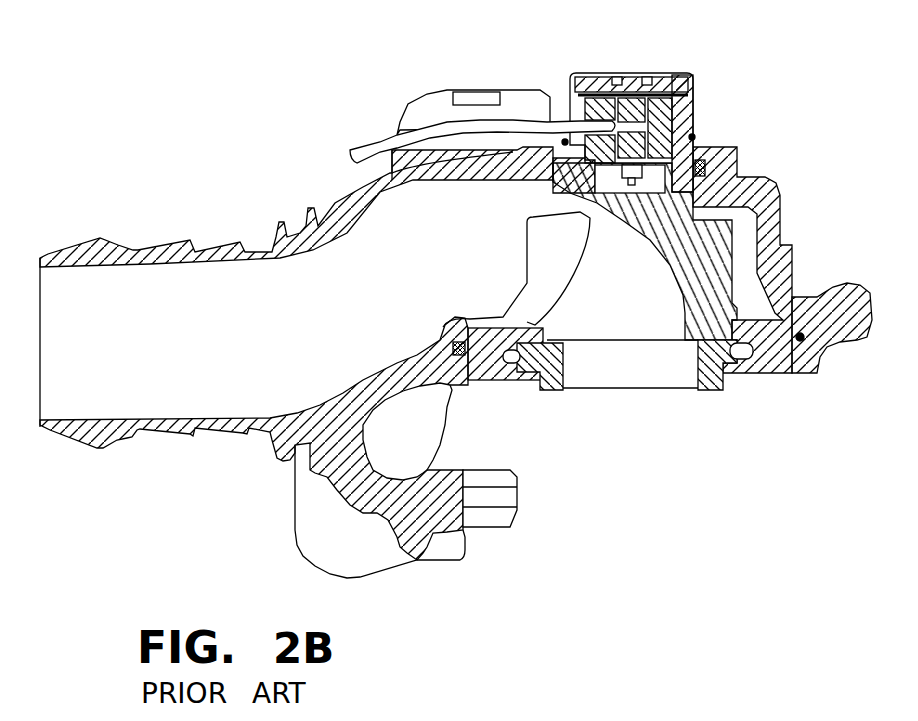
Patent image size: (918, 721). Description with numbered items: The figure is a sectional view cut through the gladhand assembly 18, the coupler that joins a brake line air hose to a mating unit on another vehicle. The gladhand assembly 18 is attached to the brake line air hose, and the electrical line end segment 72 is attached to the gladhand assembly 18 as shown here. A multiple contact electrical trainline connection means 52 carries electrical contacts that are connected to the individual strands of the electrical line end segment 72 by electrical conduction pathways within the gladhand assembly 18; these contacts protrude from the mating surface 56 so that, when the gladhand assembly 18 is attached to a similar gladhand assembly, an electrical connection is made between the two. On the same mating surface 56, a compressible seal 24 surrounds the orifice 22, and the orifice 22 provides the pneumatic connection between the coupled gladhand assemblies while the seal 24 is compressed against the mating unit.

The gladhand assembly 18 is at (157, 216).
The orifice 22 is at (632, 363).
The compressible seal 24 is at (710, 390).
The multiple contact electrical trainline connection means 52 is at (708, 97).
The mating surface 56 is at (497, 383).
The electrical line end segment 72 is at (535, 118).